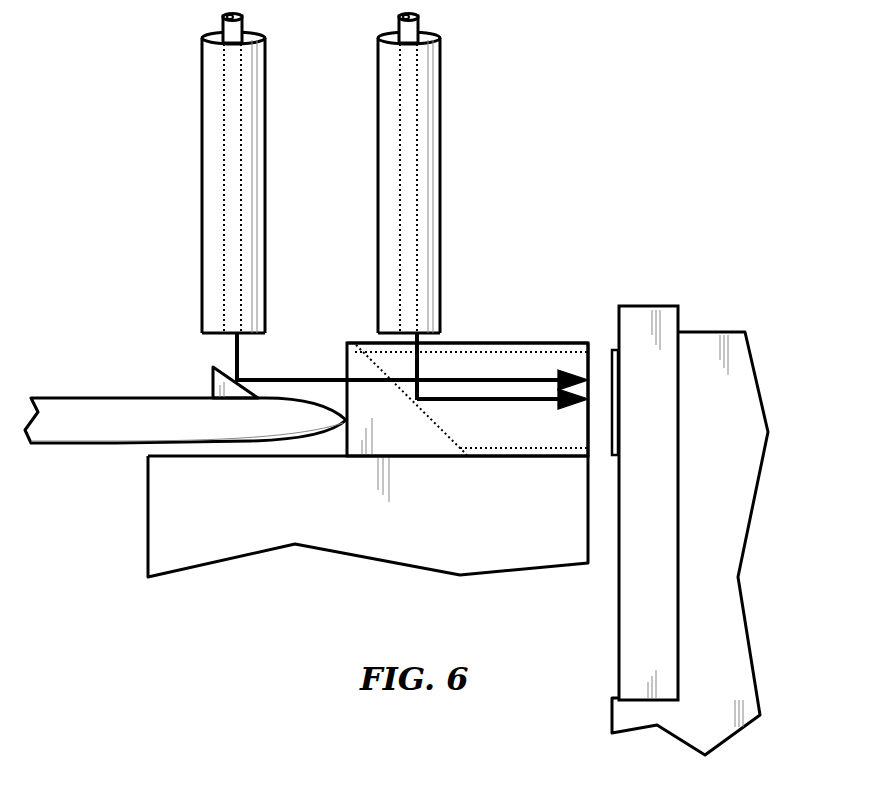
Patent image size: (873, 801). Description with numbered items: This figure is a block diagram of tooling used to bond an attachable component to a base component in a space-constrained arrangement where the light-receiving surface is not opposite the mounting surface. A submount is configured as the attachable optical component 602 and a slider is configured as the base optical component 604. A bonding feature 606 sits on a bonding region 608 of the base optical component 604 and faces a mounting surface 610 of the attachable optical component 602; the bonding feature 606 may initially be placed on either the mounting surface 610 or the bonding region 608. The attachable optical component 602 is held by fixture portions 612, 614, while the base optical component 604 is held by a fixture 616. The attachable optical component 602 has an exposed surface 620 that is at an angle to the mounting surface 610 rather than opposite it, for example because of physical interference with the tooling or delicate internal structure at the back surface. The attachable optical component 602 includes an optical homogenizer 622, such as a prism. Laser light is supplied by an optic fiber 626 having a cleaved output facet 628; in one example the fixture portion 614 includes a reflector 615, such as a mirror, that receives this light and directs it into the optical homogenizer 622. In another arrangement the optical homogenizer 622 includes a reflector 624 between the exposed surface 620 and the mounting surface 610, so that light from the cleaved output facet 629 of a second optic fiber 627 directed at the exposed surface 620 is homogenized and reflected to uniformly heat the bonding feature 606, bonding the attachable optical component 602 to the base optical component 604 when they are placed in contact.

The attachable optical component 602 is at (347, 367).
The base optical component 604 is at (652, 305).
The bonding feature 606 is at (610, 368).
The bonding region 608 is at (618, 340).
The mounting surface 610 is at (588, 443).
The fixture portion 612 is at (445, 563).
The fixture portion 614 is at (102, 403).
The reflector 615 is at (210, 395).
The fixture 616 is at (740, 638).
The exposed surface 620 is at (538, 342).
The optical homogenizer 622 is at (500, 373).
The reflector 624 is at (375, 358).
The optic fiber 626 is at (259, 157).
The optic fiber 627 is at (436, 157).
The cleaved output facet 628 is at (268, 337).
The cleaved output facet 629 is at (441, 337).